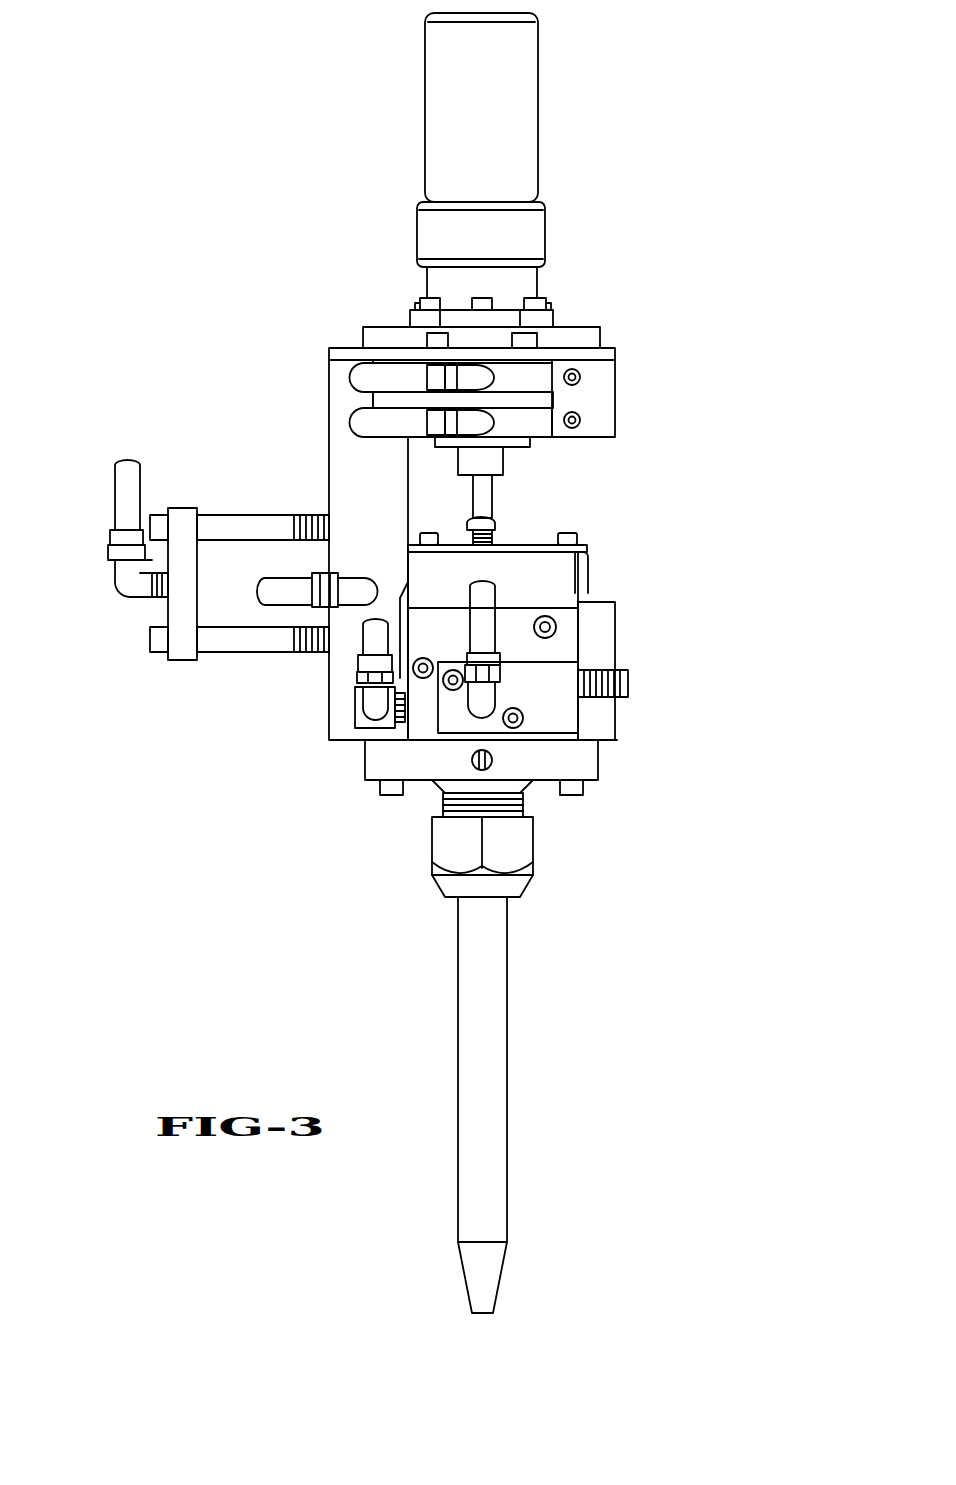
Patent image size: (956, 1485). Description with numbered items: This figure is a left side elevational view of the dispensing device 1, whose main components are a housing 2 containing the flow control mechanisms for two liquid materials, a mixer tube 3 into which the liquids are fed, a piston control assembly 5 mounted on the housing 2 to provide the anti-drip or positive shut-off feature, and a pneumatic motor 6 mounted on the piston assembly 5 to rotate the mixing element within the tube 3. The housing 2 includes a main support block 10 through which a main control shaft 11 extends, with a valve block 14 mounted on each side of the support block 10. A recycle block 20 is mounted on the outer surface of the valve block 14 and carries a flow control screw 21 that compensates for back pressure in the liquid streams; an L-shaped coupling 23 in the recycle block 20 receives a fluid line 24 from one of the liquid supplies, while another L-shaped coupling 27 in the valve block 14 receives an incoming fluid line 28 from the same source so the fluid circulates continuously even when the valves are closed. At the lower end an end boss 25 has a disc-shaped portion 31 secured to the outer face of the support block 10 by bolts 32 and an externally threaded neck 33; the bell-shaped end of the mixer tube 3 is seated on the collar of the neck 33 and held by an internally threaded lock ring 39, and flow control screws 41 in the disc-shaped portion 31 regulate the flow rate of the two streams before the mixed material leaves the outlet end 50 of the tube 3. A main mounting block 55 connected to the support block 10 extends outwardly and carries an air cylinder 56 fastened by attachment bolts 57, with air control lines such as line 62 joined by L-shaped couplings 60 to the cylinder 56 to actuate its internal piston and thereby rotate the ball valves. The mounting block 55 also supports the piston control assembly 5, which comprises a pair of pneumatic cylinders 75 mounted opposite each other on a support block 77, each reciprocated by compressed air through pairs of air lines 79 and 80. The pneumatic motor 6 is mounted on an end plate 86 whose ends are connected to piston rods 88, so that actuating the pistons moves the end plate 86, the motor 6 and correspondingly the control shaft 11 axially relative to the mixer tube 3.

The dispensing device 1 is at (312, 203).
The housing 2 is at (326, 464).
The mixer tube 3 is at (470, 1102).
The piston control assembly 5 is at (555, 356).
The pneumatic motor 6 is at (432, 123).
The main support block 10 is at (607, 613).
The main control shaft 11 is at (486, 500).
The valve block 14 is at (425, 723).
The recycle block 20 is at (562, 722).
The flow control screw 21 is at (627, 680).
The L-shaped coupling 23 is at (493, 690).
The fluid line 24 is at (488, 633).
The end boss 25 is at (606, 781).
The L-shaped coupling 27 is at (372, 707).
The incoming fluid line 28 is at (372, 640).
The disc-shaped portion 31 is at (422, 763).
The bolts 32 is at (392, 790).
The externally threaded neck 33 is at (467, 808).
The lock ring 39 is at (445, 885).
The flow control screw 41 is at (493, 763).
The outlet end 50 is at (476, 1313).
The main mounting block 55 is at (343, 560).
The air cylinder 56 is at (227, 558).
The attachment bolts 57 is at (275, 528).
The L-shaped couplings 60 is at (135, 588).
The air control line 62 is at (273, 597).
The pneumatic cylinders 75 is at (538, 437).
The support block 77 is at (612, 376).
The air lines 79 is at (352, 378).
The air lines 80 is at (352, 420).
The end plate 86 is at (547, 337).
The piston rods 88 is at (478, 335).